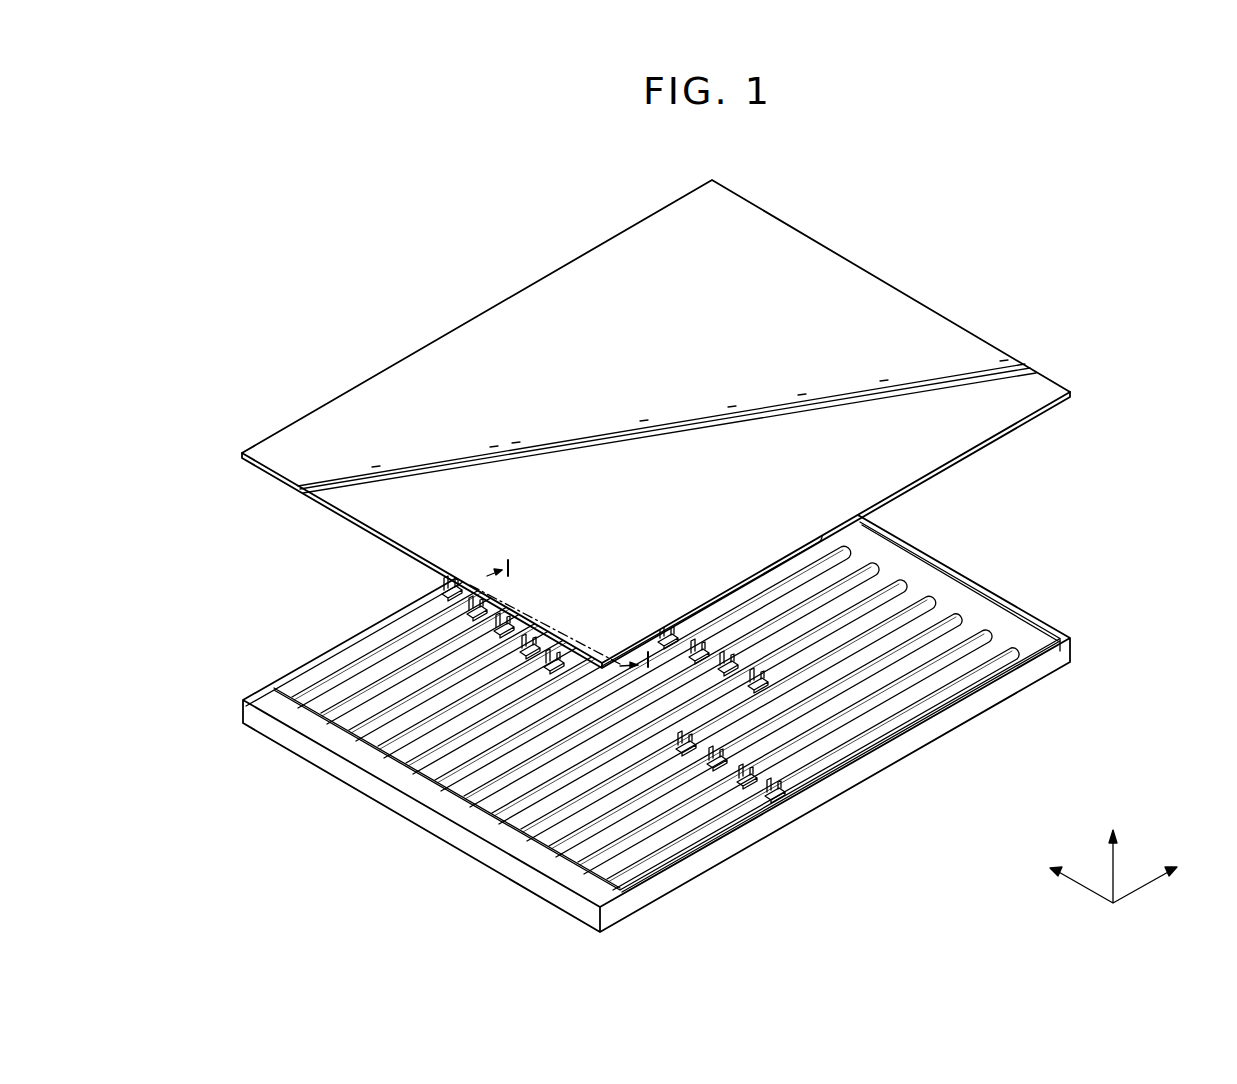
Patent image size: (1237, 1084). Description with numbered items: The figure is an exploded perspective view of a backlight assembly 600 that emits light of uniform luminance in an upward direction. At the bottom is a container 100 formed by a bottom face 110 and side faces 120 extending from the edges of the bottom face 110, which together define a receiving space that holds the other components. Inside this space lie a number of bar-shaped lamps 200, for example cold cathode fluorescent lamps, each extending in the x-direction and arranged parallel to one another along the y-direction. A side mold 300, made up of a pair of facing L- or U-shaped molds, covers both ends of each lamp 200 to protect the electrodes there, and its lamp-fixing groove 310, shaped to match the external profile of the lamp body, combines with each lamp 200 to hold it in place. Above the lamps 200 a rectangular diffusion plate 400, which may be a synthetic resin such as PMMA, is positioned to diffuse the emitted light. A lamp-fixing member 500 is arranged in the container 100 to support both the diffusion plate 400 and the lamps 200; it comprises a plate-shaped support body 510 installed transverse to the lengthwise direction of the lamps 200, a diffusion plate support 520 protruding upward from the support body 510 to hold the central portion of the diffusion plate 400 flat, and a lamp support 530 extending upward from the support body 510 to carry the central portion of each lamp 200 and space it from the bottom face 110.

The backlight assembly 600 is at (701, 164).
The diffusion plate 400 is at (988, 428).
The lamp-fixing groove 310 is at (976, 622).
The side mold 300 is at (653, 707).
The lamps 200 is at (880, 701).
The bottom face 110 is at (838, 806).
The side faces 120 is at (752, 836).
The container 100 is at (656, 681).
The lamp-fixing member 500 is at (518, 676).
The support body 510 is at (520, 655).
The diffusion plate support 520 is at (495, 640).
The lamp support 530 is at (468, 610).